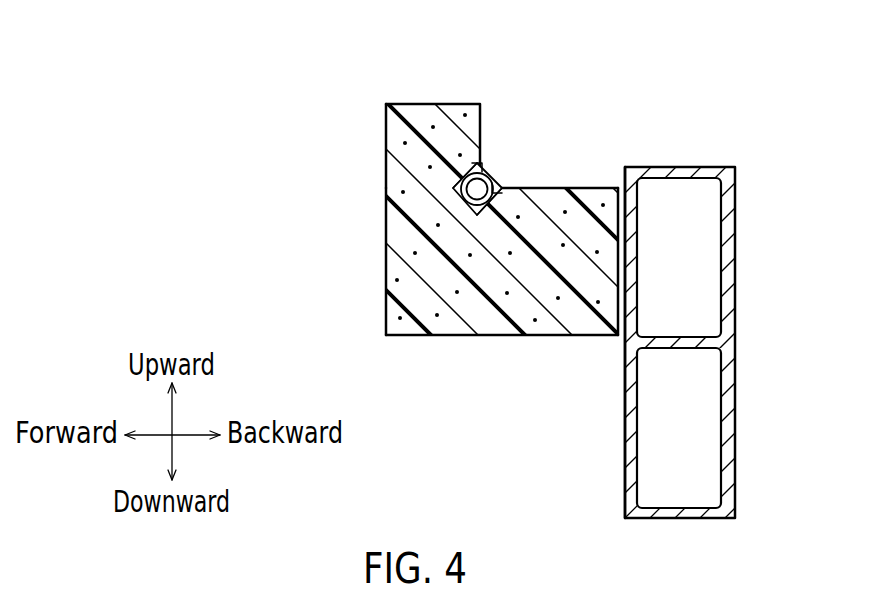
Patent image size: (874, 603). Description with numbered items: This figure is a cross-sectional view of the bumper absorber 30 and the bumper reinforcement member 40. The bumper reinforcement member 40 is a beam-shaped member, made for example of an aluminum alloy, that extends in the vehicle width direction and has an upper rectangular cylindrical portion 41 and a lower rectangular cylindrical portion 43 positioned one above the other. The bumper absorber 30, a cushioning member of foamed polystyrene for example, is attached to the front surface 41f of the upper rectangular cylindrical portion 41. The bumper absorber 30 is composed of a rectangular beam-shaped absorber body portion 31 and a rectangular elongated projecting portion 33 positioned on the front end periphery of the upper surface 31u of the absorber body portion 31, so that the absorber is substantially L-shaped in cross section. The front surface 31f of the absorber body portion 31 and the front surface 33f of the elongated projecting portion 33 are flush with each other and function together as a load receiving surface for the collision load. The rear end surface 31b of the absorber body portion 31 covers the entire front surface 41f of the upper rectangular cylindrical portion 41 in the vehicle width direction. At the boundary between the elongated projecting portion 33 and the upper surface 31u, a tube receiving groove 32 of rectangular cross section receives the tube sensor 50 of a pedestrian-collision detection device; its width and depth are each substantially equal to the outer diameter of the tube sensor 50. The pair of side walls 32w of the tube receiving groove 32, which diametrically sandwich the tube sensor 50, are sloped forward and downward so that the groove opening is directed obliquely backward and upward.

The bumper absorber 30 is at (437, 301).
The absorber body portion 31 is at (552, 300).
The front surface of absorber body portion 31f is at (385, 267).
The upper surface of absorber body portion 31u is at (549, 188).
The rear end surface of absorber body portion 31b is at (619, 258).
The tube receiving groove 32 is at (480, 164).
The side walls of tube receiving groove 32w is at (455, 187).
The elongated projecting portion 33 is at (423, 105).
The front surface of elongated projecting portion 33f is at (385, 129).
The bumper reinforcement member 40 is at (733, 311).
The upper rectangular cylindrical portion 41 is at (735, 238).
The front surface of upper rectangular cylindrical portion 41f is at (618, 192).
The lower rectangular cylindrical portion 43 is at (735, 422).
The tube sensor 50 is at (496, 183).